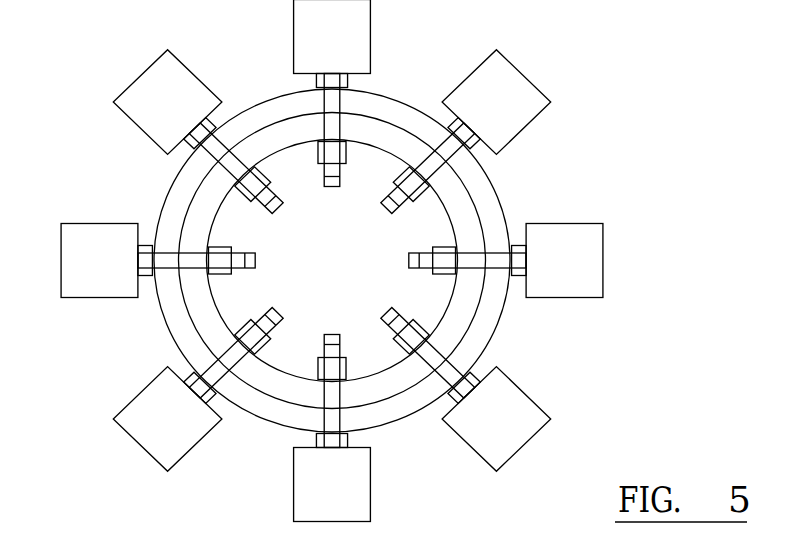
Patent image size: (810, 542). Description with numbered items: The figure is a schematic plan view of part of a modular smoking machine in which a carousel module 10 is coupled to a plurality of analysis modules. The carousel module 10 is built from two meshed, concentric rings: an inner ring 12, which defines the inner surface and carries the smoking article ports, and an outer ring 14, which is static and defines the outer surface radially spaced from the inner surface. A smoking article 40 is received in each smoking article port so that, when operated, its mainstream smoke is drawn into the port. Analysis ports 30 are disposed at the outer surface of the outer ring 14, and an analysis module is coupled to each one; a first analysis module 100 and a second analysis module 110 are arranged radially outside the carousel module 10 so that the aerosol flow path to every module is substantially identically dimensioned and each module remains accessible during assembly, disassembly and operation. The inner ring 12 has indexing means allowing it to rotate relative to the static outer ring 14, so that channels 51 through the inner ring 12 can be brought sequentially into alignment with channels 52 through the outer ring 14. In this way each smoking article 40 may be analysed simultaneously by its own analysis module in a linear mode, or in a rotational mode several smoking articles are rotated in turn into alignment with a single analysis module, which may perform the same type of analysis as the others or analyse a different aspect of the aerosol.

The carousel module 10 is at (153, 195).
The inner ring 12 is at (447, 213).
The outer ring 14 is at (490, 198).
The analysis port 30 is at (500, 158).
The smoking article 40 is at (382, 208).
The channel 51 is at (440, 142).
The channel 52 is at (345, 134).
The first analysis module 100 is at (513, 88).
The second analysis module 110 is at (145, 427).